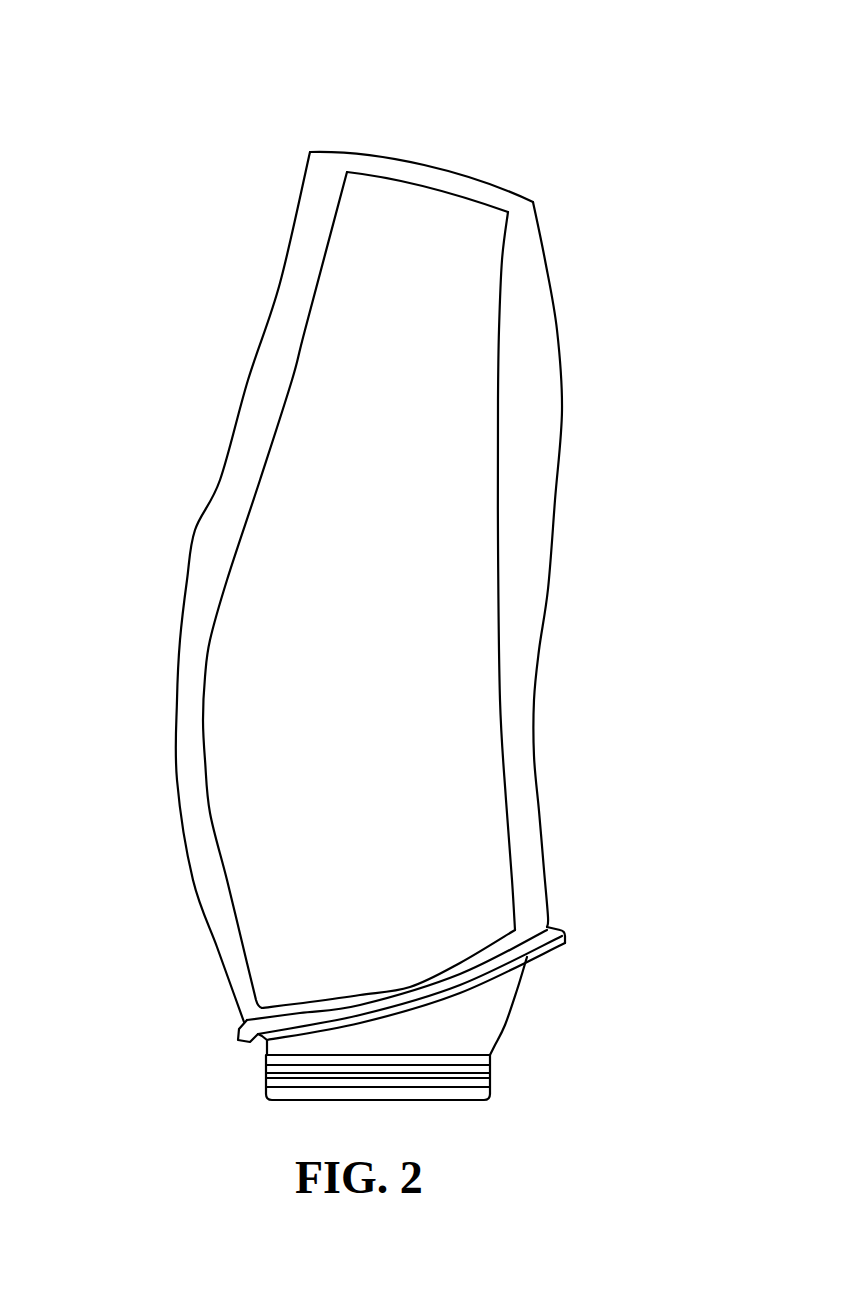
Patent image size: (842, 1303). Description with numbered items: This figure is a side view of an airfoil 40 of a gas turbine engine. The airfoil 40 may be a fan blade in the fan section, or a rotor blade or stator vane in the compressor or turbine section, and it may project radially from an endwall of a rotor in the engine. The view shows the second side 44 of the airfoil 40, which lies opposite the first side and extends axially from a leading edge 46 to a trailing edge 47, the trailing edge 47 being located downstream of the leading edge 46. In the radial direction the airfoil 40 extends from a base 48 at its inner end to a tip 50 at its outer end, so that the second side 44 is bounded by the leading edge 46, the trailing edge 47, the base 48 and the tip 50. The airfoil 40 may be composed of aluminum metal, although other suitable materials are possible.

The airfoil 40 is at (412, 557).
The second side 44 is at (283, 687).
The leading edge 46 is at (267, 317).
The trailing edge 47 is at (562, 410).
The base 48 is at (540, 976).
The tip 50 is at (480, 172).